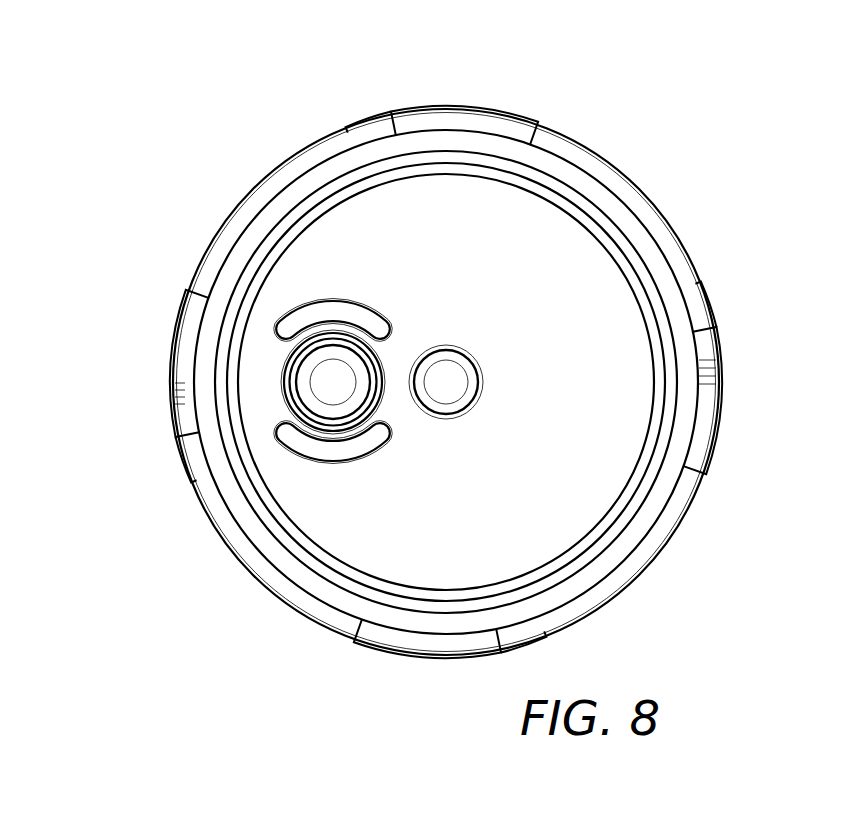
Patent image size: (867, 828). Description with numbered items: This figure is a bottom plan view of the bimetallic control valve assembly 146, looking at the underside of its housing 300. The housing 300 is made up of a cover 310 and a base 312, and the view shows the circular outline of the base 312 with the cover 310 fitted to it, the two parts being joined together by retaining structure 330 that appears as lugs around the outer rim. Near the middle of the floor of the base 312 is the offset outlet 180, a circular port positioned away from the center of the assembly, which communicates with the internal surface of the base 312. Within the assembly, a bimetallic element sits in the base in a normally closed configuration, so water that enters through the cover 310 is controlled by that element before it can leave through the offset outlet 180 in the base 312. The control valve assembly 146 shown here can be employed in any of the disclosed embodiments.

The control valve assembly 146 is at (712, 178).
The housing 300 is at (124, 328).
The offset outlet 180 is at (283, 383).
The cover 310 is at (195, 508).
The base 312 is at (237, 535).
The retaining structure 330 is at (398, 656).